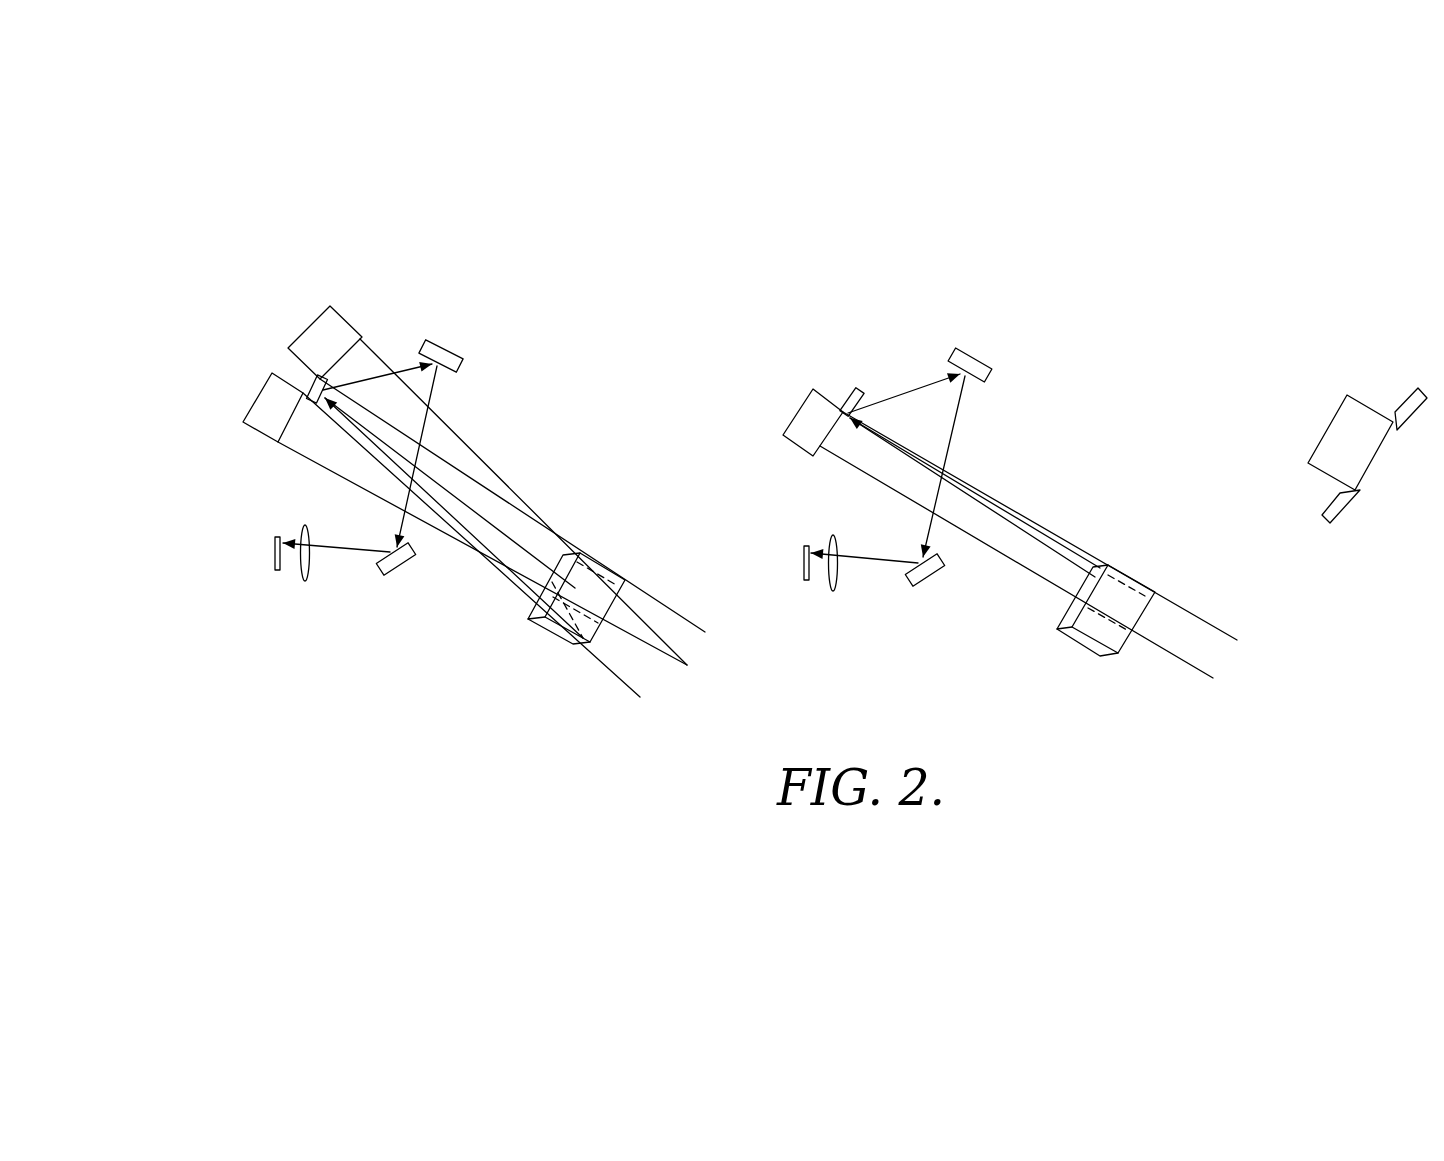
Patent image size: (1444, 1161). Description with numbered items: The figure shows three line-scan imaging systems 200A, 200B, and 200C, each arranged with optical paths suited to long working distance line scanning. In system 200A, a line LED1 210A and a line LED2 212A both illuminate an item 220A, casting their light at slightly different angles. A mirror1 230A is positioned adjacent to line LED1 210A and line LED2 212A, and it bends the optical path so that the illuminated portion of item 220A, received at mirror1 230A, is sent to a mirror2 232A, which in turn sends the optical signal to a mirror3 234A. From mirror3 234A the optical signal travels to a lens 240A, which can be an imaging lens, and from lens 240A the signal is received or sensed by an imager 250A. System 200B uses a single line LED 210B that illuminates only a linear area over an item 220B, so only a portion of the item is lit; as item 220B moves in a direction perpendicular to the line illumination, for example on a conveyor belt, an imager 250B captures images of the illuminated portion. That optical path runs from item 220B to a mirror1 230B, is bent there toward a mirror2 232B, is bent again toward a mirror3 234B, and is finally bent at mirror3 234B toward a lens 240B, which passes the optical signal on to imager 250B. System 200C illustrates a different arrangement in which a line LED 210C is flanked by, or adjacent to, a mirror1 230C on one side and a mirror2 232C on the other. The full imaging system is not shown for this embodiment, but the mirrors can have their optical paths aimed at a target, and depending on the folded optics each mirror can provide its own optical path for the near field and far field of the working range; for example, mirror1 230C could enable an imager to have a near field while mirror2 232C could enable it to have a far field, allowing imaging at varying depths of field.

The line scan imaging system 200A is at (540, 268).
The line LED1 210A is at (347, 268).
The line LED2 212A is at (255, 428).
The mirror1 230A is at (312, 384).
The mirror2 232A is at (452, 320).
The mirror3 234A is at (404, 578).
The item 220A is at (603, 572).
The lens 240A is at (309, 573).
The imager 250A is at (275, 548).
The line scan imaging system 200B is at (1022, 297).
The line LED 210B is at (797, 413).
The mirror1 230B is at (848, 405).
The mirror2 232B is at (979, 356).
The mirror3 234B is at (934, 580).
The item 220B is at (1125, 573).
The lens 240B is at (831, 537).
The imager 250B is at (804, 563).
The imaging system 200C is at (1312, 318).
The line LED 210C is at (1325, 428).
The mirror1 230C is at (1413, 392).
The mirror2 232C is at (1340, 497).